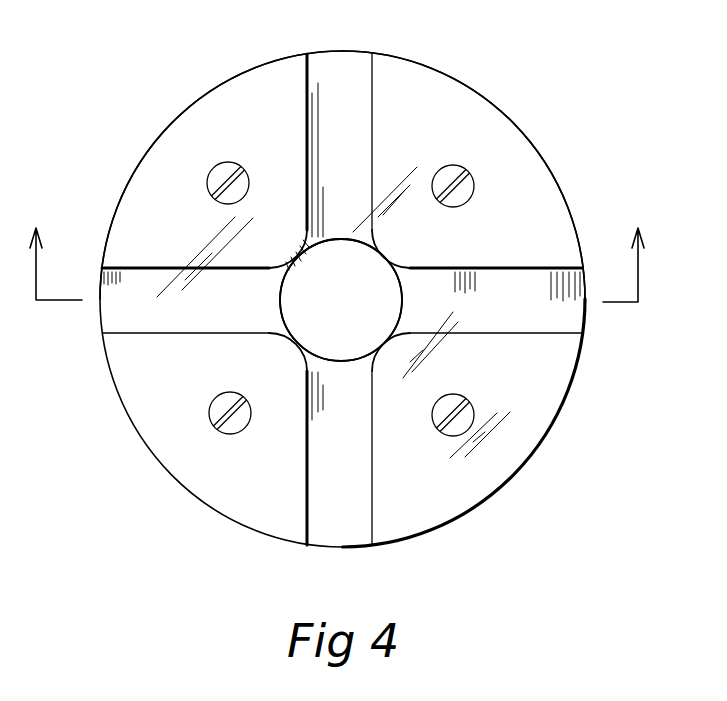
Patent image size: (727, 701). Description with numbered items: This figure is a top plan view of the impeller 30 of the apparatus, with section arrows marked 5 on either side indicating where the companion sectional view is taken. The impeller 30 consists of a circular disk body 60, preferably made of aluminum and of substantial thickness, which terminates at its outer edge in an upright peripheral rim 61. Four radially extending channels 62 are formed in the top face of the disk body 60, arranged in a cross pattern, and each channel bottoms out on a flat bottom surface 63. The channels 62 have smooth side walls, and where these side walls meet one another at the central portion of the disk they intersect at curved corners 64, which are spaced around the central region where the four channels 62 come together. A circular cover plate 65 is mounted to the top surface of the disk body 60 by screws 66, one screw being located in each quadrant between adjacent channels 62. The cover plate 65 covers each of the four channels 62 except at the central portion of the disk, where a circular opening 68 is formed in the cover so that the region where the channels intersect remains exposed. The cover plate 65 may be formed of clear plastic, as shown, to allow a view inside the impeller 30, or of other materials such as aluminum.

The impeller 30 is at (537, 141).
The circular disk body 60 is at (455, 82).
The upright peripheral rim 61 is at (513, 482).
The radially extending channels 62 is at (347, 67).
The flat bottom surface 63 is at (331, 292).
The curved corners 64 is at (305, 254).
The circular cover plate 65 is at (193, 125).
The screws 66 is at (233, 166).
The circular opening 68 is at (328, 358).
The section line 5- 5 is at (335, 247).